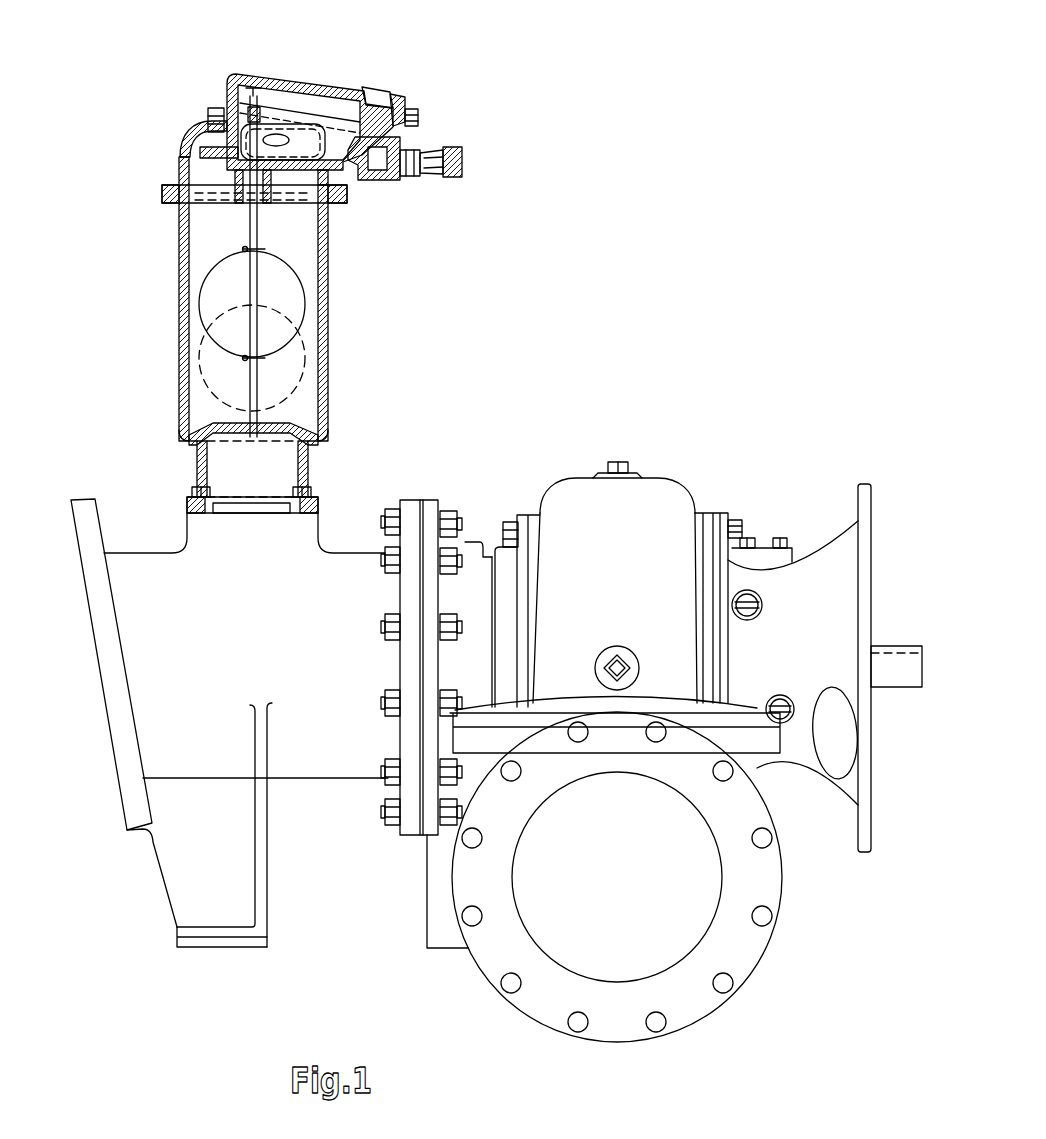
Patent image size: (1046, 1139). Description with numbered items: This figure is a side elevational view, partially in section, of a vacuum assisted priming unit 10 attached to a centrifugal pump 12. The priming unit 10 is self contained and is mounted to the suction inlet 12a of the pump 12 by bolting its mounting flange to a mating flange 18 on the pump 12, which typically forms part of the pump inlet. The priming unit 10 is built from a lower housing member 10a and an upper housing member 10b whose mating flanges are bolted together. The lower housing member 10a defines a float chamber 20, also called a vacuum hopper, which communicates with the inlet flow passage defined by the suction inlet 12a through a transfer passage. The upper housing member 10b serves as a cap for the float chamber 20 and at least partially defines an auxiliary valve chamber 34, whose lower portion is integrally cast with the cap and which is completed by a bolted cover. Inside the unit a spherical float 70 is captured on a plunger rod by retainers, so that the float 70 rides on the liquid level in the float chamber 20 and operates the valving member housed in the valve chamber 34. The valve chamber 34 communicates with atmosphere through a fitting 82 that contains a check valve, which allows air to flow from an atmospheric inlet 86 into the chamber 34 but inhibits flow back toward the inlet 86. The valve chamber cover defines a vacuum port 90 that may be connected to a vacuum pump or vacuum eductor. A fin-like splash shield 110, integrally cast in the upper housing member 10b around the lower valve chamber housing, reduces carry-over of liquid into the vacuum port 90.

The vacuum assisted priming unit 10 is at (363, 265).
The lower housing member 10a is at (327, 353).
The upper housing member 10b is at (180, 160).
The centrifugal pump 12 is at (496, 700).
The suction inlet 12a is at (276, 663).
The mating flange 18 is at (320, 510).
The float chamber 20 is at (300, 243).
The auxiliary valve chamber 34 is at (295, 97).
The spherical float 70 is at (283, 287).
The fitting 82 is at (428, 190).
The atmospheric inlet 86 is at (453, 148).
The vacuum port 90 is at (378, 98).
The splash shield 110 is at (203, 150).